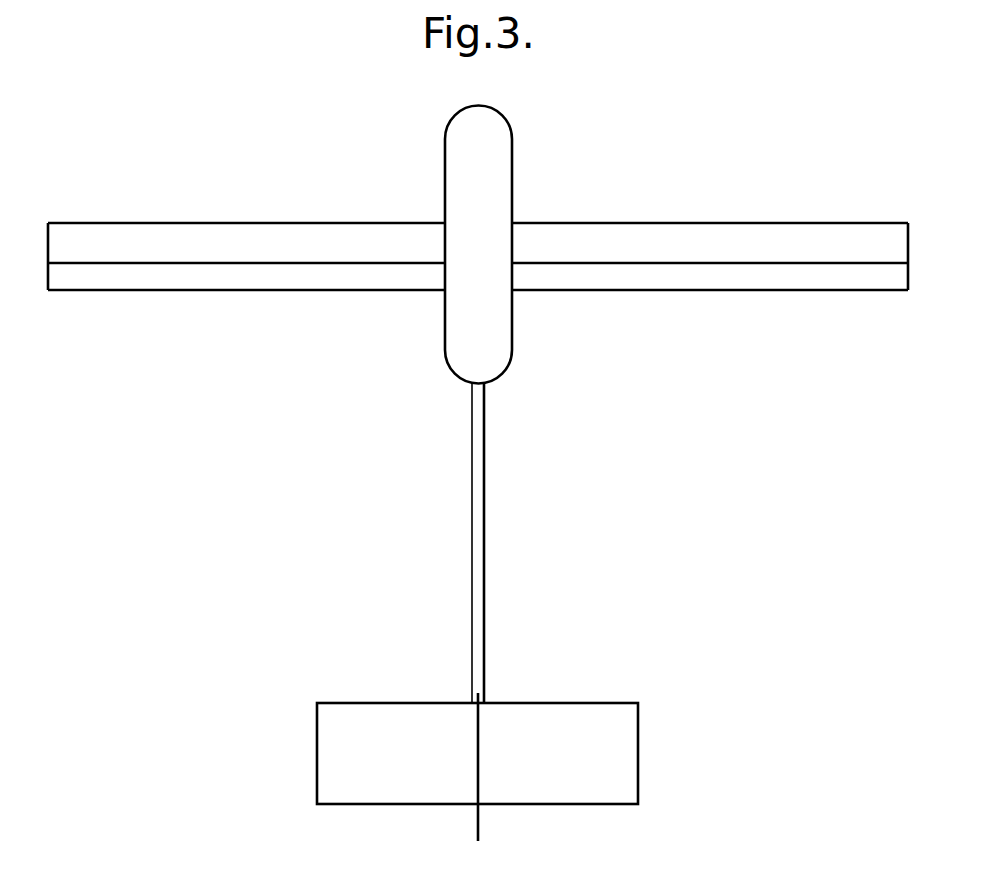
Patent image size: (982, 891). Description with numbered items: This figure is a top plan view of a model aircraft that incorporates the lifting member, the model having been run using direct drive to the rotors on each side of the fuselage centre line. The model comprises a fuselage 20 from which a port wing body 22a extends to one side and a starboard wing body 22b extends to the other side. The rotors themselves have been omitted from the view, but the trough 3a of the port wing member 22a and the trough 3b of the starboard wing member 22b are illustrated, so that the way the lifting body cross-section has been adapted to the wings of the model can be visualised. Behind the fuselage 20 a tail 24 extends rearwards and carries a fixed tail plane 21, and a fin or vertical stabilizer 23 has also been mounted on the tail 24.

The fuselage 20 is at (503, 180).
The trough of port wing member 3a is at (180, 246).
The trough of starboard wing member 3b is at (737, 236).
The port wing body 22a is at (182, 278).
The starboard wing body 22b is at (742, 280).
The tail 24 is at (478, 570).
The fixed tail plane 21 is at (604, 716).
The fin or vertical stabilizer 23 is at (474, 711).